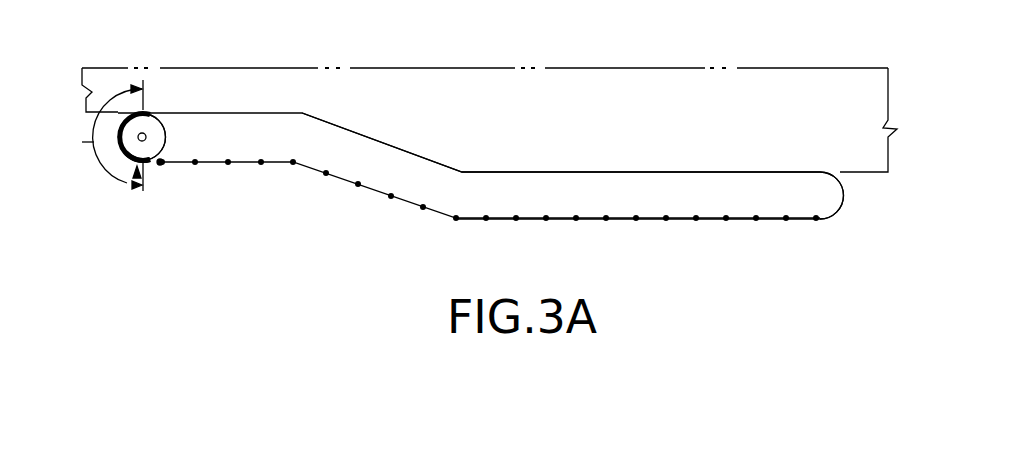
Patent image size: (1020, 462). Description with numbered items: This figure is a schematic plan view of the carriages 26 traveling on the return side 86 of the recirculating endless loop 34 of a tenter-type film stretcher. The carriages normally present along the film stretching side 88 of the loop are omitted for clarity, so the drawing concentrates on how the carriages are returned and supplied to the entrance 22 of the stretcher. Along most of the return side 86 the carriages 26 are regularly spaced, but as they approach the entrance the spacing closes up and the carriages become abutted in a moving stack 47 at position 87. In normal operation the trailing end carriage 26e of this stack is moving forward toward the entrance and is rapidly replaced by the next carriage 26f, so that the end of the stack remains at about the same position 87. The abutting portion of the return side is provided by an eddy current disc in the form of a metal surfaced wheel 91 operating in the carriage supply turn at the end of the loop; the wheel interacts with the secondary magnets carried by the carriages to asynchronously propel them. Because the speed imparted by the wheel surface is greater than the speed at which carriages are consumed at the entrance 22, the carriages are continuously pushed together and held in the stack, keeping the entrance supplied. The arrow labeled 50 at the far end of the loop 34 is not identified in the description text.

The housing reference plane 22 is at (115, 119).
The roller 26 is at (147, 111).
The roller surface 91 is at (165, 132).
The rotation arc 47 is at (123, 158).
The roller contact surface 26e is at (137, 163).
The roller edge 26f is at (147, 165).
The gap dimension 87 is at (135, 185).
The blade upper edge 88 is at (367, 133).
The blade 34 is at (490, 190).
The heating wire 86 is at (468, 220).
The blade tip 50 is at (847, 185).